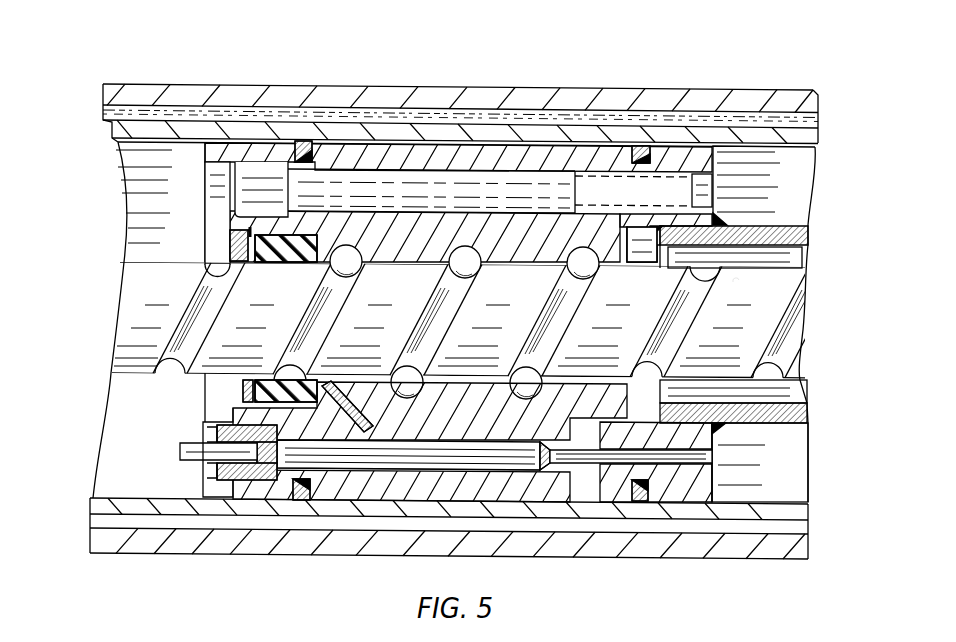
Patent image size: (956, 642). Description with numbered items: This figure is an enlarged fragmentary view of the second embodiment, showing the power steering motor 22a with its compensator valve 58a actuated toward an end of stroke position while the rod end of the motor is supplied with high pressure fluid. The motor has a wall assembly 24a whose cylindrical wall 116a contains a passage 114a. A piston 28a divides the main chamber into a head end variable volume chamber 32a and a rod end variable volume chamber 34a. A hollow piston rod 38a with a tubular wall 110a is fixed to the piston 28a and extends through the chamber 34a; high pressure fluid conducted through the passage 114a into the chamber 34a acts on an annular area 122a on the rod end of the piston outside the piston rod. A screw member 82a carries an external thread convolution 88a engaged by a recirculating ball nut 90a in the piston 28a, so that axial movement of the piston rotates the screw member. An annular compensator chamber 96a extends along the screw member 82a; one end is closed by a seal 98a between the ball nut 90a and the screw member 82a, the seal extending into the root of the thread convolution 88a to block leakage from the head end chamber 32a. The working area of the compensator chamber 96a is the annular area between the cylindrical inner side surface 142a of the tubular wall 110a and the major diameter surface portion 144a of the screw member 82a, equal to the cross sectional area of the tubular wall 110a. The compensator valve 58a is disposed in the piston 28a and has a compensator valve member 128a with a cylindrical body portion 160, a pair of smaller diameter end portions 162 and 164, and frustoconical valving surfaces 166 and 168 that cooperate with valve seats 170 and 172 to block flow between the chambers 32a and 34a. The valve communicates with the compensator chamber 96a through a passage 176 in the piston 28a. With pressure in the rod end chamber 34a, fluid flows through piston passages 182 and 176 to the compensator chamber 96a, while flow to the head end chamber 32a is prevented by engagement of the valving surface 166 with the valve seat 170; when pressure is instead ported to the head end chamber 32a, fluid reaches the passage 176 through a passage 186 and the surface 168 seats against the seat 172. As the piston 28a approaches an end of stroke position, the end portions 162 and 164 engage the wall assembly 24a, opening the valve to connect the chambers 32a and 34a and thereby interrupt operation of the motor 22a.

The power steering motor 22a is at (533, 15).
The wall assembly 24a is at (680, 87).
The piston 28a is at (385, 138).
The head end variable volume chamber 32a is at (113, 443).
The rod end variable volume chamber 34a is at (797, 493).
The piston rod 38a is at (782, 222).
The compensator valve 58a is at (365, 473).
The screw member 82a is at (117, 335).
The external thread convolution 88a is at (222, 270).
The recirculating ball nut 90a is at (468, 240).
The compensator chamber 96a is at (787, 397).
The seal 98a is at (213, 260).
The tubular wall 110a is at (805, 229).
The passage 114a is at (178, 107).
The cylindrical wall 116a is at (278, 97).
The annular area 122a is at (728, 488).
The shaft bore surface 128a is at (425, 472).
The cylindrical inner side surface 142a is at (802, 262).
The major diameter surface portion 144a is at (746, 262).
The cylindrical body portion 160 is at (446, 452).
The end portion 162 is at (190, 443).
The end portion 164 is at (712, 453).
The frustoconical valving surface 166 is at (263, 450).
The frustoconical valving surface 168 is at (563, 442).
The valve seat 170 is at (252, 474).
The valve seat 172 is at (563, 467).
The passage 176 is at (367, 393).
The piston passage 182 is at (667, 474).
The passage 186 is at (217, 478).